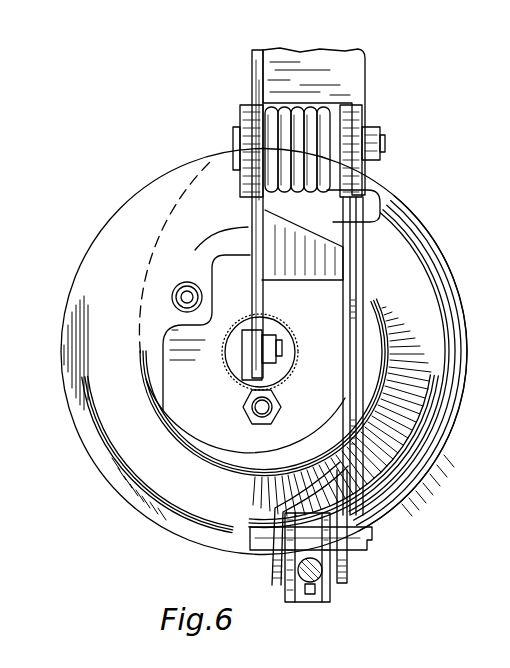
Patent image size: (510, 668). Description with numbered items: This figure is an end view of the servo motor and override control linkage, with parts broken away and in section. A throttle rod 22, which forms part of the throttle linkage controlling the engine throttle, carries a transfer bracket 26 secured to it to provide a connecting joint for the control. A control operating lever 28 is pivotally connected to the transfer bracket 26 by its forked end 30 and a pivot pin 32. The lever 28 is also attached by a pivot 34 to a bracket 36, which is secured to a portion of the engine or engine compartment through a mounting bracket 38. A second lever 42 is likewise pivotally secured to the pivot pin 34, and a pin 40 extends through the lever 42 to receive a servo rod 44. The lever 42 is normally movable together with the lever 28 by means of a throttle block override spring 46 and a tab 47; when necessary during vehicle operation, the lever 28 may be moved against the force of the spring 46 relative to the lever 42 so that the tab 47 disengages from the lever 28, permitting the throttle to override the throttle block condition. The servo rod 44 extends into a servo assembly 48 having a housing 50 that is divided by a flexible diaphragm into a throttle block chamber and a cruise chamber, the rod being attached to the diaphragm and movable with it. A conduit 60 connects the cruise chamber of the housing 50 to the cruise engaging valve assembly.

The pivot pin 22 is at (300, 582).
The anchor block 26 is at (327, 587).
The brake band rod 28 is at (347, 293).
The anchor bar 30 is at (348, 568).
The anchor bracket 32 is at (363, 532).
The adjusting nut 34 is at (382, 140).
The spring seat washers 36 is at (243, 103).
The support frame 38 is at (355, 74).
The hub 40 is at (283, 356).
The actuating rod 42 is at (255, 220).
The hub nut 44 is at (273, 370).
The compression spring 46 is at (305, 108).
The bracket plate 47 is at (270, 267).
The brake band 48 is at (428, 225).
The brake lining 50 is at (430, 382).
The rivet 60 is at (183, 283).